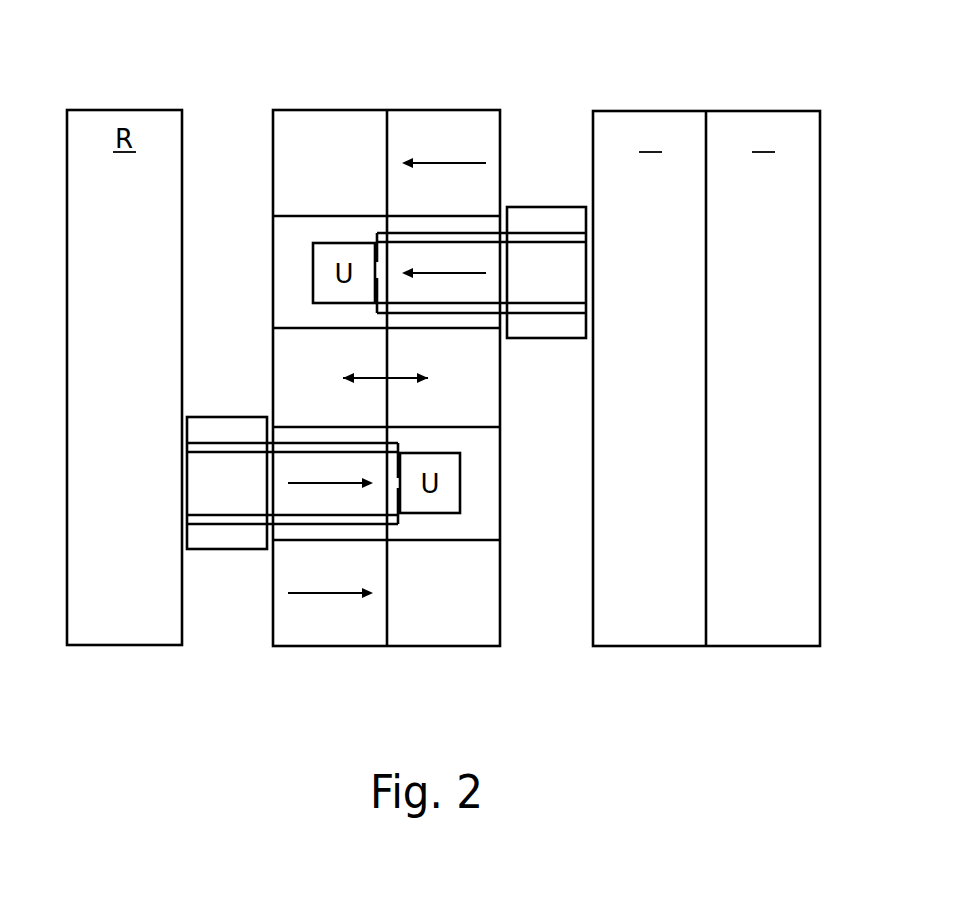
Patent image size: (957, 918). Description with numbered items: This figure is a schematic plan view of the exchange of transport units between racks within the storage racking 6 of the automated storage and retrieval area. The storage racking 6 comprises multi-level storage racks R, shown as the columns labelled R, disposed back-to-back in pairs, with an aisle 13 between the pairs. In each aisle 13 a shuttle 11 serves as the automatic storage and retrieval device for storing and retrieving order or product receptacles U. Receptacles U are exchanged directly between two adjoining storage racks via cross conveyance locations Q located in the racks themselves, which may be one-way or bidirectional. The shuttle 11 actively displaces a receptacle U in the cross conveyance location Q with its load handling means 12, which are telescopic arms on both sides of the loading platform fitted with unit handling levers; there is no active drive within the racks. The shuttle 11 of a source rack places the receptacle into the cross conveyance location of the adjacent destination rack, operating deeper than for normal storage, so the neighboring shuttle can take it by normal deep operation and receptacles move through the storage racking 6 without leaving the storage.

The storage racking 6 is at (857, 377).
The shuttle 11 is at (544, 215).
The load handling means 12 is at (375, 518).
The aisle 13 is at (227, 143).